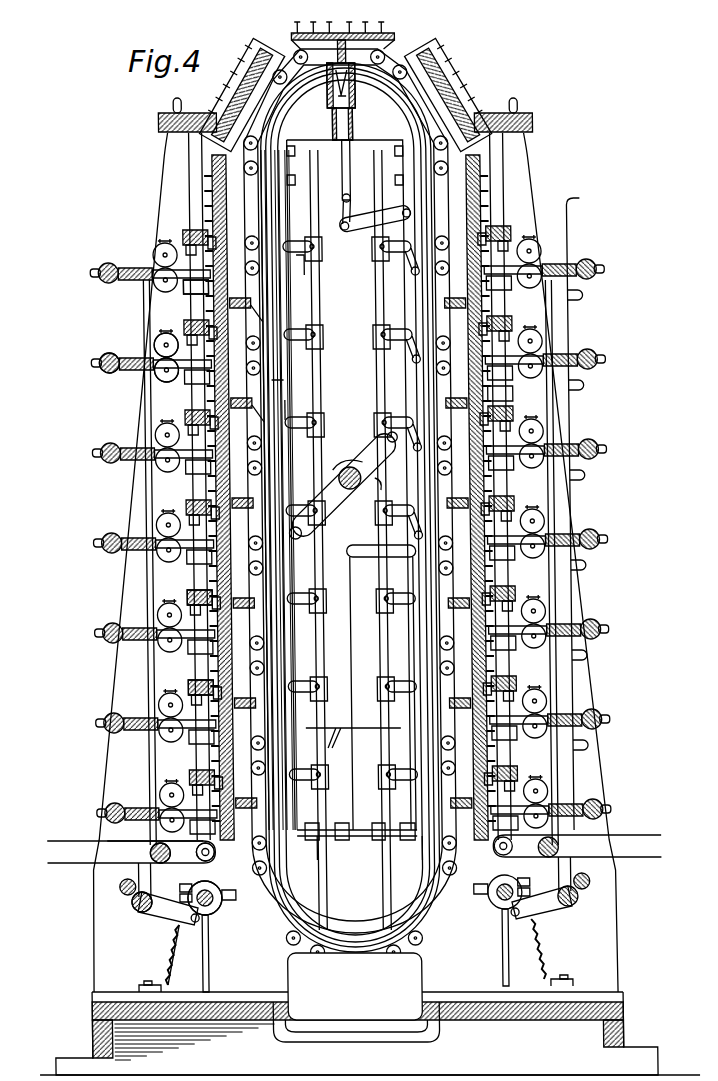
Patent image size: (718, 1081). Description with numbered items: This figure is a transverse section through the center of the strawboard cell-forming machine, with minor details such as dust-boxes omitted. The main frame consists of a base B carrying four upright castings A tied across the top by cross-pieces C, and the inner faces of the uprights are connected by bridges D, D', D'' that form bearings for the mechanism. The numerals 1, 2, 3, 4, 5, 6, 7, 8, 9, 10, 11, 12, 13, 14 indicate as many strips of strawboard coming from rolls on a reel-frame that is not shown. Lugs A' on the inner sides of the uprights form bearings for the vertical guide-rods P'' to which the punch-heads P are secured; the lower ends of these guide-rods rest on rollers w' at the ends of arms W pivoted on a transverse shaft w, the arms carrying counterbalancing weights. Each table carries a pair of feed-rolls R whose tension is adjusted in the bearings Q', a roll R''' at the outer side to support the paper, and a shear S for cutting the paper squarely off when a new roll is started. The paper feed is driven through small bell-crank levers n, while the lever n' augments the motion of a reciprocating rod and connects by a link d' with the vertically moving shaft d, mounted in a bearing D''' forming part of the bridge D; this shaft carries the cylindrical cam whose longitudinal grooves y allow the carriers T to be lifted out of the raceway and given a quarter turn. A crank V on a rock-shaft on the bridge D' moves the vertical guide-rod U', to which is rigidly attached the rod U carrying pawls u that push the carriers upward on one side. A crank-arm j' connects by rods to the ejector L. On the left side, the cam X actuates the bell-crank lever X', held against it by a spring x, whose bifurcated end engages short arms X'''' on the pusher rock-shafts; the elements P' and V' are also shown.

The strip of strawboard 1 is at (100, 804).
The strip of strawboard 2 is at (100, 714).
The strip of strawboard 3 is at (100, 624).
The strip of strawboard 4 is at (100, 534).
The strip of strawboard 5 is at (100, 444).
The strip of strawboard 6 is at (100, 354).
The strip of strawboard 7 is at (100, 264).
The strip of strawboard 8 is at (594, 259).
The strip of strawboard 9 is at (594, 349).
The strip of strawboard 10 is at (594, 439).
The strip of strawboard 11 is at (594, 529).
The strip of strawboard 12 is at (594, 619).
The strip of strawboard 13 is at (594, 709).
The strip of strawboard 14 is at (594, 799).
The upright casting A is at (351, 562).
The lug A' is at (346, 295).
The base B is at (252, 1050).
The cross-piece C is at (345, 113).
The bridge D is at (349, 485).
The bridge D' is at (357, 493).
The bridge D'' is at (353, 742).
The bearing D''' is at (333, 101).
The vertically-moving shaft d is at (351, 170).
The link d' is at (333, 209).
The crank-arm j' is at (383, 687).
The ejector L is at (334, 890).
The small bell-crank lever n is at (406, 393).
The lever n' is at (375, 216).
The punch-head P is at (354, 588).
The block bracket P' is at (505, 393).
The vertical guide-rod P'' is at (348, 496).
The bearing Q' is at (155, 382).
The feed-roll R is at (154, 321).
The roll R''' is at (354, 418).
The shear S is at (579, 514).
The carrier T is at (252, 88).
The rod U is at (286, 490).
The vertical guide-rod U' is at (259, 387).
The pawl u is at (247, 366).
The crank V is at (344, 485).
The lever bar V' is at (293, 405).
The arm W is at (355, 904).
The transverse shaft w is at (351, 862).
The roller w' is at (354, 862).
The cam X is at (358, 906).
The bell-crank lever X' is at (364, 914).
The short arm X'''' is at (347, 846).
The spring x is at (362, 955).
The longitudinal groove y is at (349, 83).